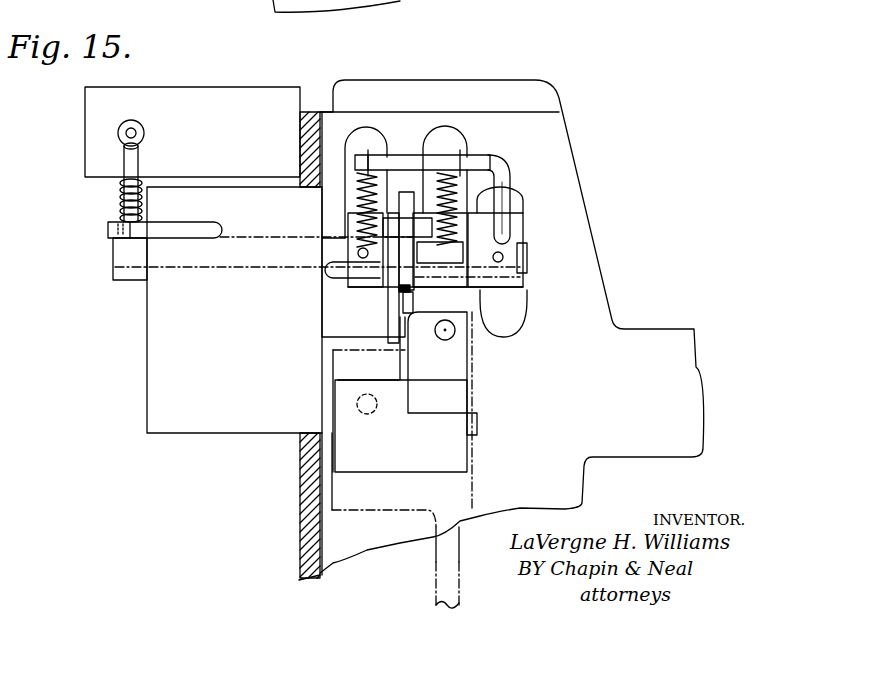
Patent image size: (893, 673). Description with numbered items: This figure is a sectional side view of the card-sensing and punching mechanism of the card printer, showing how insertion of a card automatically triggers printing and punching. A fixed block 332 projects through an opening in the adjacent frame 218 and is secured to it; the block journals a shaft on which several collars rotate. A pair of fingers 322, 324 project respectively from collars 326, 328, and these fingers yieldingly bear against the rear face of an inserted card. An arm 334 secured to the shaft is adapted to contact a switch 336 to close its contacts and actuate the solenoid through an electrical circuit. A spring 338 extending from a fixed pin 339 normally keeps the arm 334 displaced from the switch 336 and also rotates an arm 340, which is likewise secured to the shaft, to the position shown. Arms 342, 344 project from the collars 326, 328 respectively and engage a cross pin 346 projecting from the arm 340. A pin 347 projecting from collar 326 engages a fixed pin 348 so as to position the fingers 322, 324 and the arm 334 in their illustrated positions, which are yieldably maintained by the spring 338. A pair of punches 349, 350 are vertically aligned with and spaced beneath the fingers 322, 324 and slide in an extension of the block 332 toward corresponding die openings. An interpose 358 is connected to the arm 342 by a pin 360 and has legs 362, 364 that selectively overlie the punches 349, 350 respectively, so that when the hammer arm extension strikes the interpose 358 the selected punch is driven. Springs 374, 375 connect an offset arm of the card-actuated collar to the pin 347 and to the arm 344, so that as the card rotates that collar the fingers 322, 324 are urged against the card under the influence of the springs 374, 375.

The frame 218 is at (299, 550).
The finger 322 is at (358, 183).
The finger 324 is at (438, 173).
The collar 326 is at (385, 300).
The collar 328 is at (462, 290).
The fixed block 332 is at (147, 408).
The arm 334 is at (120, 162).
The switch 336 is at (192, 86).
The spring 338 is at (120, 196).
The fixed pin 339 is at (205, 205).
The arm 340 is at (402, 190).
The arm 342 is at (333, 350).
The arm 344 is at (438, 248).
The cross pin 346 is at (383, 225).
The pin 347 is at (358, 253).
The fixed pin 348 is at (340, 282).
The punch 349 is at (357, 405).
The punch 350 is at (455, 338).
The interpose 358 is at (398, 368).
The pin 360 is at (380, 310).
The leg 362 is at (350, 472).
The leg 364 is at (477, 425).
The spring 374 is at (362, 187).
The spring 375 is at (505, 170).